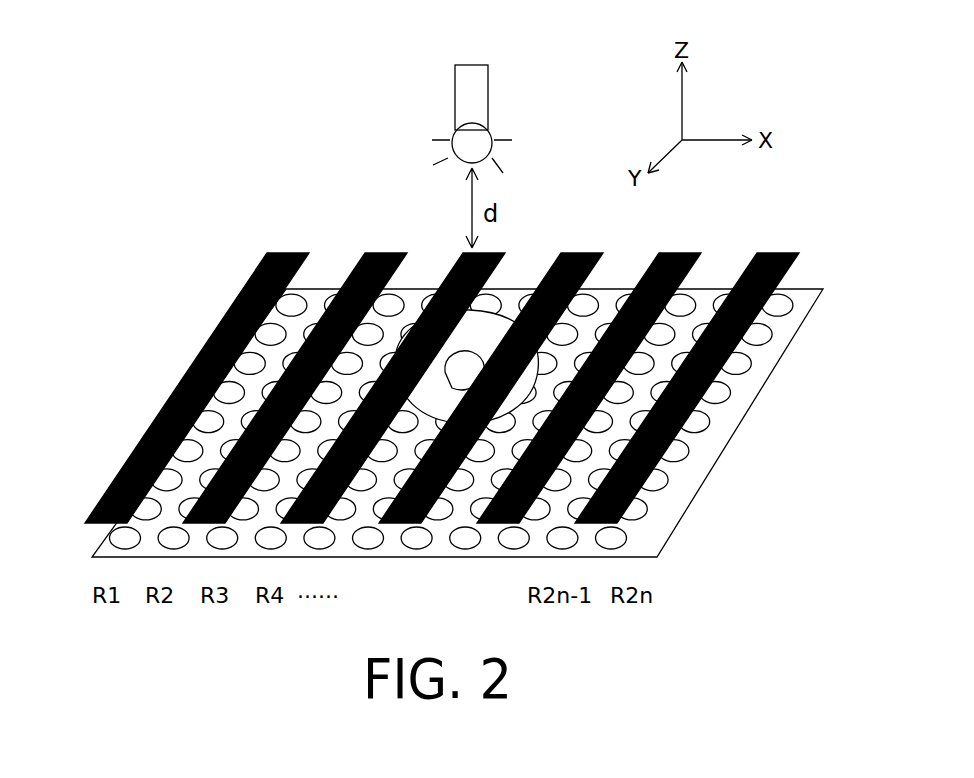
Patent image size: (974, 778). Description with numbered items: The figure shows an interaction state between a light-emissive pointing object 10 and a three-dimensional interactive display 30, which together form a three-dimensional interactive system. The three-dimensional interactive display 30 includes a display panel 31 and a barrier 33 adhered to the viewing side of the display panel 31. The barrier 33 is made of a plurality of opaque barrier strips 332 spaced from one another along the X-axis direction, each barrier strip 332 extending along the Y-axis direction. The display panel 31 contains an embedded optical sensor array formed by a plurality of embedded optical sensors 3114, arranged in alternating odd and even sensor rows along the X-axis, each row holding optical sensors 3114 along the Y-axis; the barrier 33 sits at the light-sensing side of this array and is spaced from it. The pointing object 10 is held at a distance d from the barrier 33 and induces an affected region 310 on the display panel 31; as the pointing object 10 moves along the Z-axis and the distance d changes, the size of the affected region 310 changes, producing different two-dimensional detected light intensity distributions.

The pointing object 10 is at (478, 88).
The 3D interactive display 30 is at (926, 202).
The display panel 31 is at (786, 357).
The barrier 33 is at (780, 252).
The affected region 310 is at (488, 332).
The barrier strip 332 is at (260, 268).
The embedded optical sensor 3114 is at (622, 541).